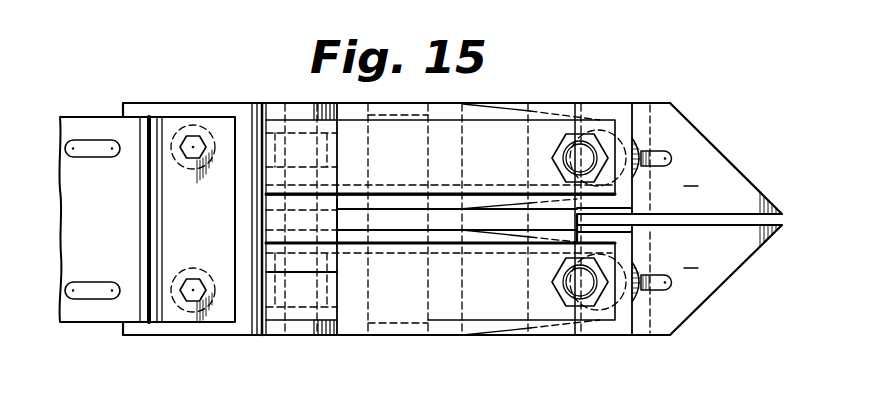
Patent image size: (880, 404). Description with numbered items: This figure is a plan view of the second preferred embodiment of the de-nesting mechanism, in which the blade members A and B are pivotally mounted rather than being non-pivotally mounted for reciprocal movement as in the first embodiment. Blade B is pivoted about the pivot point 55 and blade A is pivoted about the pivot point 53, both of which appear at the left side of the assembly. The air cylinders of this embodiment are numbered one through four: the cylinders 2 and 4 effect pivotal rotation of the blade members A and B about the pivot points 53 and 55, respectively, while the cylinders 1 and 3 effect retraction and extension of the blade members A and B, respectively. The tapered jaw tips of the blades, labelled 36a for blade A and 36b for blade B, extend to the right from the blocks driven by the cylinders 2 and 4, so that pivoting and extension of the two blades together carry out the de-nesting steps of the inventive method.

The air cylinder 1 is at (440, 337).
The air cylinder 2 is at (618, 328).
The air cylinder 3 is at (447, 108).
The air cylinder 4 is at (615, 108).
The lower jaw A 36a is at (738, 268).
The upper jaw B 36b is at (735, 165).
The pivot point 53 is at (300, 336).
The pivot point 55 is at (298, 122).